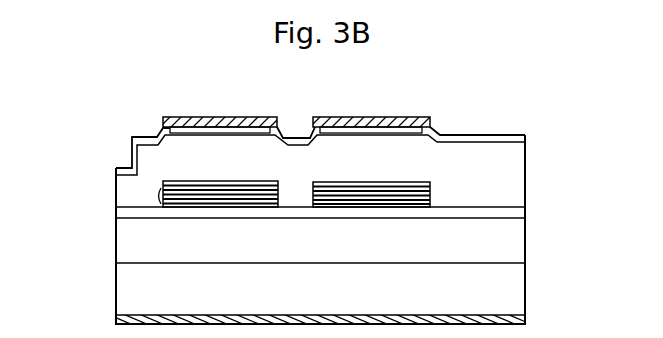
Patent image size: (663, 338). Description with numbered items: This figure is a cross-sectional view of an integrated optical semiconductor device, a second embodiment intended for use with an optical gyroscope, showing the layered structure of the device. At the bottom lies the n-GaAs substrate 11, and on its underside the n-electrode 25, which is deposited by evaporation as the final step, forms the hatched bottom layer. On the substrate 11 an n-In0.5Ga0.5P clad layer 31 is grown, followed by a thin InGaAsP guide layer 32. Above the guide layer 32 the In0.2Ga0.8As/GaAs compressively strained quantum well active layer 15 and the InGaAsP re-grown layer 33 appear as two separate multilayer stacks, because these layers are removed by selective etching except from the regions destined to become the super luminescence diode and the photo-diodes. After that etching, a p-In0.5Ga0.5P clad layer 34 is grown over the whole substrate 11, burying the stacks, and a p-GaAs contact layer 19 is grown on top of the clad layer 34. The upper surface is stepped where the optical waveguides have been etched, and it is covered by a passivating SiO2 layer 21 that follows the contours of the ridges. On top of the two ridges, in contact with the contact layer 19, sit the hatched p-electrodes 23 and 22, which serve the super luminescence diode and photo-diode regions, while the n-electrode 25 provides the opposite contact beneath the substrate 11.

The n-GaAs substrate 11 is at (517, 297).
The compressively strained quantum well active layer 15 is at (157, 193).
The p-GaAs contact layer 19 is at (255, 131).
The SiO2 layer 21 is at (472, 137).
The p-electrode 22 is at (367, 117).
The p-electrode 23 is at (183, 117).
The n-electrode 25 is at (135, 315).
The n-In0.5Ga0.5P clad layer 31 is at (515, 257).
The InGaAsP guide layer 32 is at (127, 215).
The InGaAsP re-grown layer 33 is at (430, 182).
The p-In0.5Ga0.5P clad layer 34 is at (508, 185).